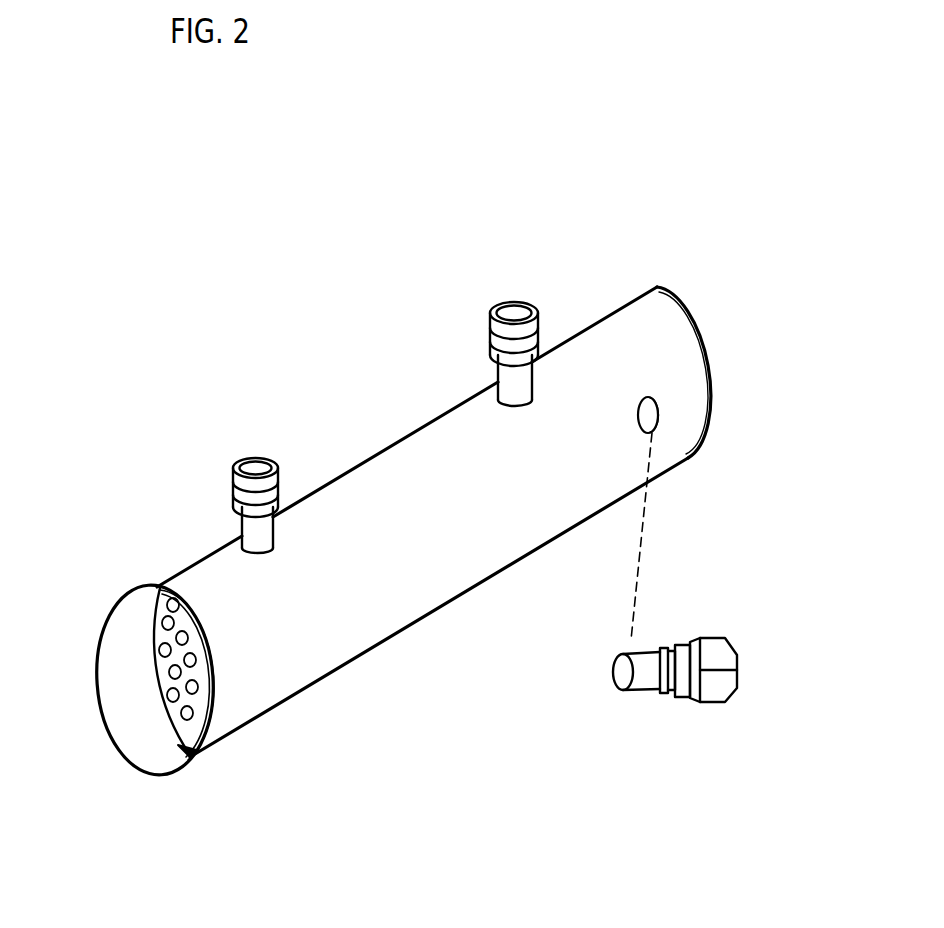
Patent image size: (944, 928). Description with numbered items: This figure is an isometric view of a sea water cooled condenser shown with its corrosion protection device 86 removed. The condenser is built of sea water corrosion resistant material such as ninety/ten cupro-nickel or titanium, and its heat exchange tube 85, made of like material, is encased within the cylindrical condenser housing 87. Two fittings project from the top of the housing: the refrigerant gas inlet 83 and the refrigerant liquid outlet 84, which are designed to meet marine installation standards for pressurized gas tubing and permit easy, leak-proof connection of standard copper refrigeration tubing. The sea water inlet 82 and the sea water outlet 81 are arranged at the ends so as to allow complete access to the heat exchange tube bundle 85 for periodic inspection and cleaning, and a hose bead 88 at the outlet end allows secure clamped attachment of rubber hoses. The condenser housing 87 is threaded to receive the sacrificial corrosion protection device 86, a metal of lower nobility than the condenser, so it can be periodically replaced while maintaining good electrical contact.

The sea water outlet 81 is at (135, 760).
The sea water inlet 82 is at (692, 298).
The refrigerant gas inlet 83 is at (237, 458).
The refrigerant liquid outlet 84 is at (508, 302).
The heat exchange tube 85 is at (160, 667).
The corrosion protection device 86 is at (643, 693).
The condenser housing 87 is at (330, 652).
The hose bead 88 is at (182, 762).